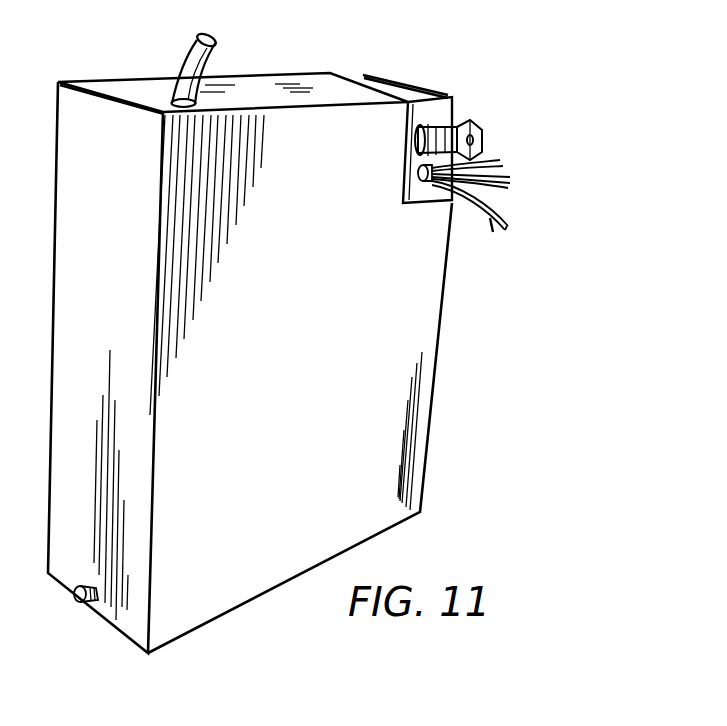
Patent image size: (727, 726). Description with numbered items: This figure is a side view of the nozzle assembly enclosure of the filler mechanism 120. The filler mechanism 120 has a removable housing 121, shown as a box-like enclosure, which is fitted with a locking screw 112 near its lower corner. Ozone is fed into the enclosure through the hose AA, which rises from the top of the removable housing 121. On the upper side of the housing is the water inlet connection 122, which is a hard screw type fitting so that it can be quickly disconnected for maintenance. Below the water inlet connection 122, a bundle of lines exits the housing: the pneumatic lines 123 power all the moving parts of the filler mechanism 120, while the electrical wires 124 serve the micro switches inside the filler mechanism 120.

The locking screw 112 is at (80, 601).
The filler mechanism 120 is at (456, 408).
The removable housing 121 is at (398, 472).
The water inlet connection 122 is at (473, 123).
The pneumatic lines 123 is at (503, 172).
The electrical wires 124 is at (508, 228).
The hose AA is at (187, 56).